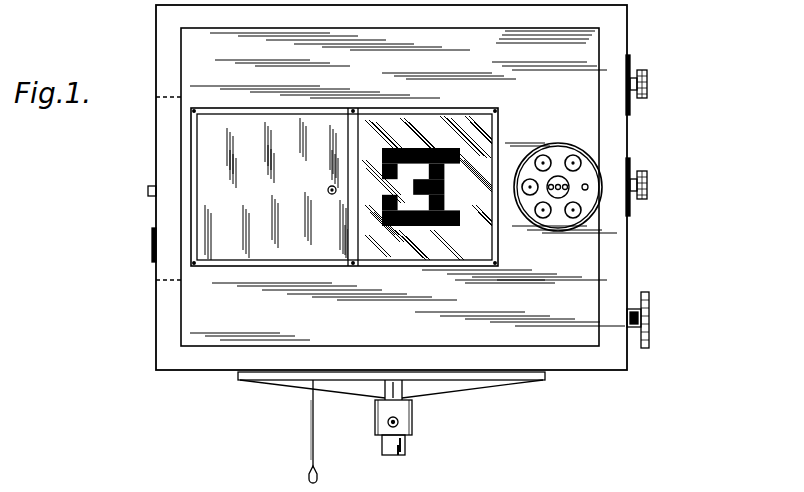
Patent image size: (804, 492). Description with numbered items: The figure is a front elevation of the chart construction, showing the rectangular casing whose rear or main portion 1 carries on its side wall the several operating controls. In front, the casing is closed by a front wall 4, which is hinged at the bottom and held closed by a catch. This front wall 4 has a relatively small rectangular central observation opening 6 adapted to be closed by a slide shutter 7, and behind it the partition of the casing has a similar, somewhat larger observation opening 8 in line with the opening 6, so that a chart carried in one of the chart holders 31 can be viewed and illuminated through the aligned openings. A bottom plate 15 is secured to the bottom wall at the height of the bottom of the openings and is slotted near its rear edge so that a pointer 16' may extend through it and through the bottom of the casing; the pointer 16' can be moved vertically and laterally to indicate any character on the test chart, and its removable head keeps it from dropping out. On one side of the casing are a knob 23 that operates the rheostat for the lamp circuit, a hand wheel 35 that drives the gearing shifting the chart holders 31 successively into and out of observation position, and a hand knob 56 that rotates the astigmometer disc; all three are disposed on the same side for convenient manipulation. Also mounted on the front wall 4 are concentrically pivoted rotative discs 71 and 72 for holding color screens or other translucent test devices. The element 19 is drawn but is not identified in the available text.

The rear or main portion of the casing 1 is at (158, 74).
The front wall 4 is at (403, 187).
The central observation opening 6 is at (426, 250).
The slide shutter 7 is at (268, 251).
The observation opening 8 is at (522, 186).
The bottom plate 15 is at (447, 472).
The pointer 16' is at (296, 431).
The hinge 19 is at (160, 222).
The knob 23 is at (647, 84).
The chart holders 31 is at (435, 190).
The hand wheel 35 is at (649, 306).
The hand knob 56 is at (647, 184).
The rotative disc 71 is at (590, 155).
The rotative disc 72 is at (587, 170).